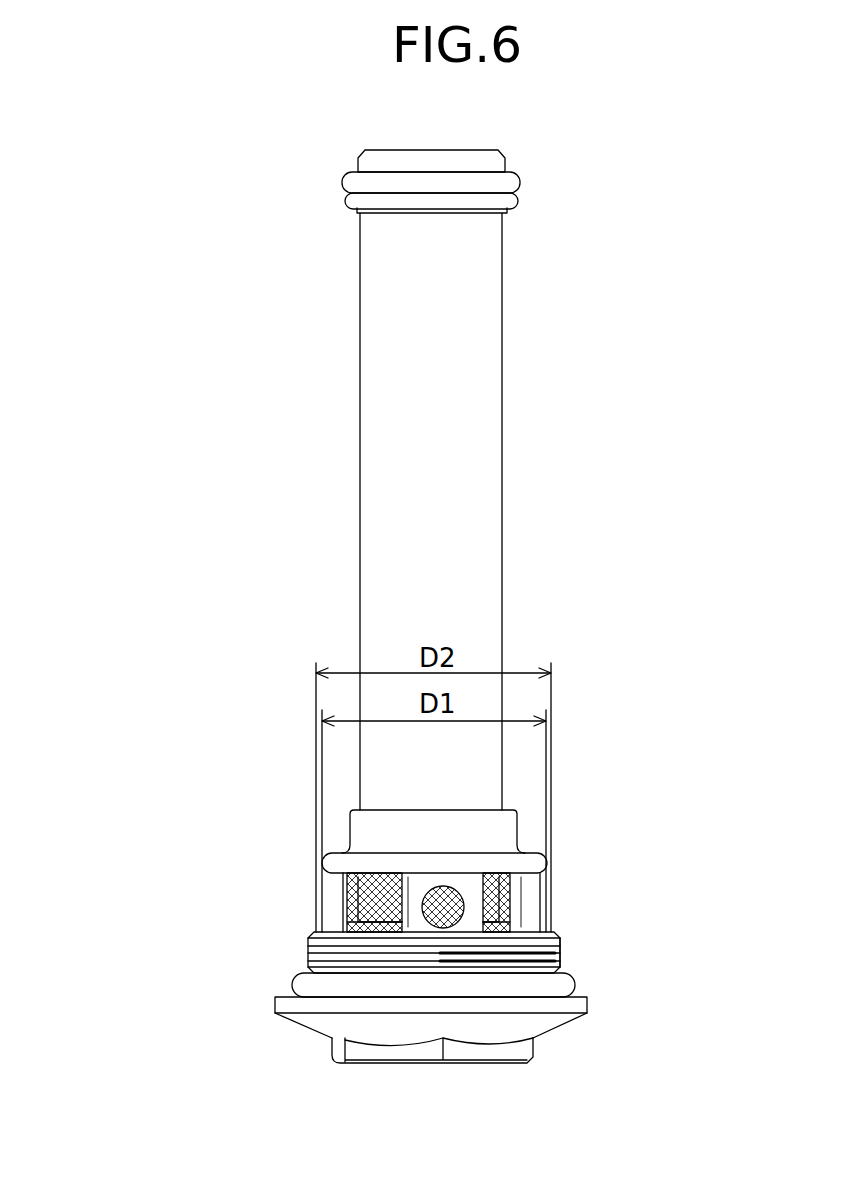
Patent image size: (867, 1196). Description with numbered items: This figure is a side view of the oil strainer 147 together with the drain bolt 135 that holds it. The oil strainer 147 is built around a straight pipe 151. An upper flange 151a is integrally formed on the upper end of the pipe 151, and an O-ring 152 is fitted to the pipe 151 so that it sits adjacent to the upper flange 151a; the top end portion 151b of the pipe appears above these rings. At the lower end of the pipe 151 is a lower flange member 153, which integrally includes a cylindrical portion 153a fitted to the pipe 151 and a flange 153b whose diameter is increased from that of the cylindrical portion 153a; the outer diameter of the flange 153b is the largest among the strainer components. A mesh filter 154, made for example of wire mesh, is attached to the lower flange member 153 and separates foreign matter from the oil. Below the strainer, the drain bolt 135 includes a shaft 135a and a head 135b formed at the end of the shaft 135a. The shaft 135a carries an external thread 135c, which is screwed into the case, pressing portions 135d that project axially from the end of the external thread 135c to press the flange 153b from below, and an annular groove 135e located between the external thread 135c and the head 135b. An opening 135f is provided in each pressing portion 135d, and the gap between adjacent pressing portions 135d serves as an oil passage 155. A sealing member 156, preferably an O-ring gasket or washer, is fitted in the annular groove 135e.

The drain bolt 135 is at (315, 1035).
The shaft 135a is at (307, 947).
The head 135b is at (412, 1055).
The external thread 135c is at (563, 950).
The pressing portion 135d is at (325, 885).
The annular groove 135e is at (277, 1005).
The opening 135f is at (440, 928).
The oil strainer 147 is at (358, 350).
The pipe 151 is at (383, 433).
The upper flange 151a is at (350, 202).
The head portion 151b is at (498, 167).
The O-ring 152 is at (513, 182).
The lower flange member 153 is at (453, 815).
The cylindrical portion 153a is at (508, 830).
The flange 153b is at (537, 862).
The mesh filter 154 is at (357, 908).
The oil passage 155 is at (377, 932).
The sealing member 156 is at (458, 988).